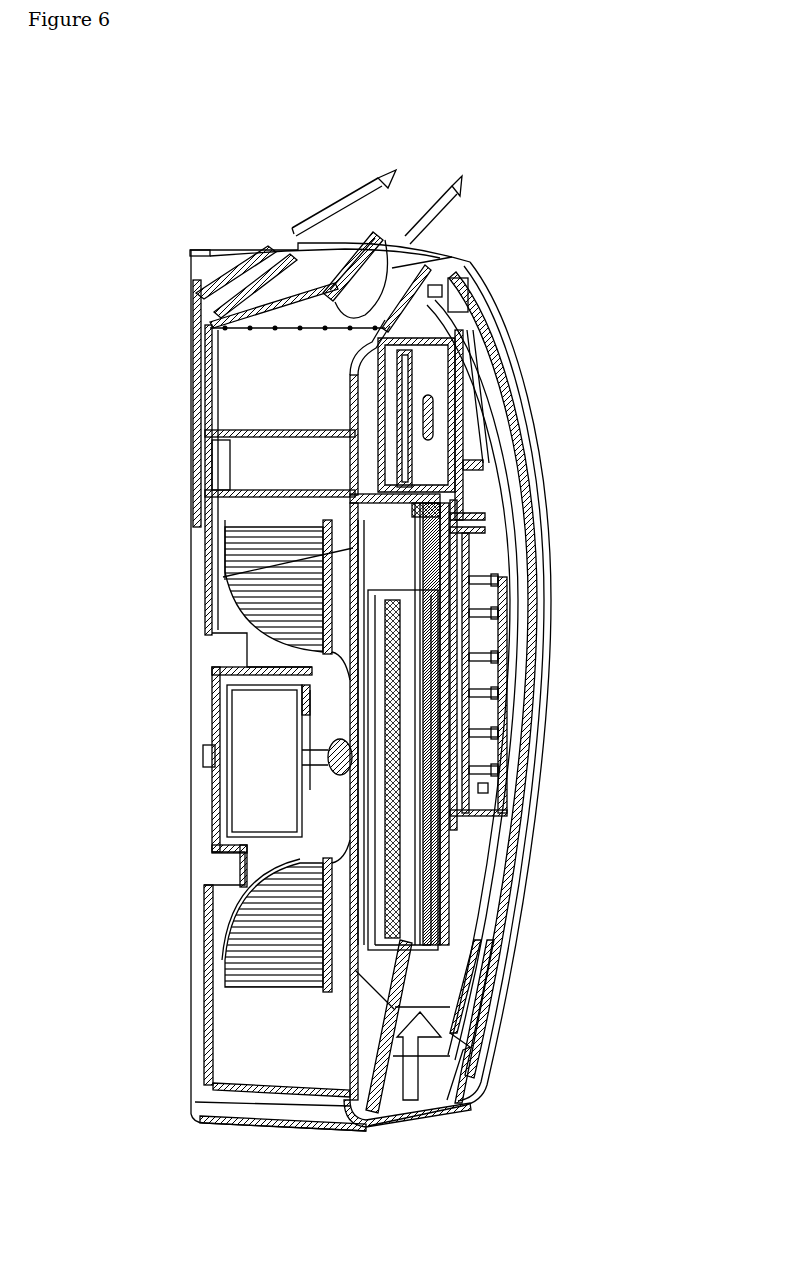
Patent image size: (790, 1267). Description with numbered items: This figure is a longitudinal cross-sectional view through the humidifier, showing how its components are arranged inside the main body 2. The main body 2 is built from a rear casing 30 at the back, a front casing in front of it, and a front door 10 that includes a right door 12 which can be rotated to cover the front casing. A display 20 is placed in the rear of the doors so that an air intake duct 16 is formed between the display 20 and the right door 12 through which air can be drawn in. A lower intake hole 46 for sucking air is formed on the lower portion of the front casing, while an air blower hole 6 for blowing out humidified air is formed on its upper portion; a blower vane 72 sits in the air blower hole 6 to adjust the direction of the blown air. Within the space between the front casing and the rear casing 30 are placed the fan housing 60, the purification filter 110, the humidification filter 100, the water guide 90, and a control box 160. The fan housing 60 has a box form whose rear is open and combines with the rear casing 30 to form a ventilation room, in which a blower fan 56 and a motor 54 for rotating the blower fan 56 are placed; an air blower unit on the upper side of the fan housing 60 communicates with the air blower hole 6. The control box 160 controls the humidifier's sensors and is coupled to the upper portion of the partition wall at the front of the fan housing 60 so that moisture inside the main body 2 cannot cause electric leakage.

The main body 2 is at (165, 237).
The air blower hole 6 is at (318, 250).
The front door 10 is at (509, 694).
The right door 12 is at (551, 584).
The air intake duct 16 is at (515, 623).
The display 20 is at (503, 733).
The rear casing 30 is at (190, 490).
The lower intake hole 46 is at (400, 1025).
The motor 54 is at (258, 750).
The blower fan 56 is at (265, 620).
The fan housing 60 is at (340, 576).
The blower vane 72 is at (397, 208).
The water guide 90 is at (403, 940).
The humidification filter 100 is at (415, 878).
The purification filter 110 is at (440, 892).
The control box 160 is at (438, 407).